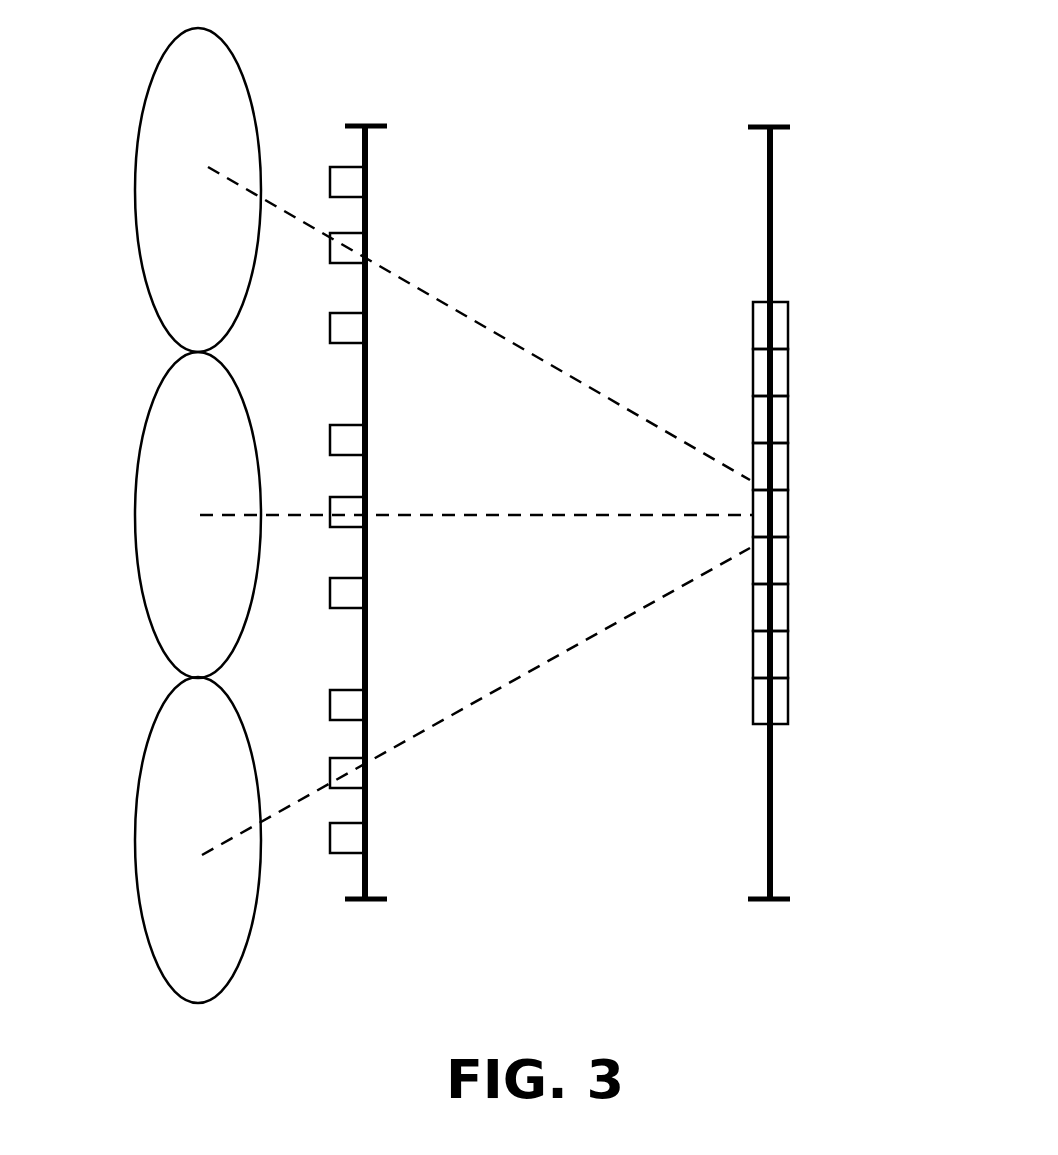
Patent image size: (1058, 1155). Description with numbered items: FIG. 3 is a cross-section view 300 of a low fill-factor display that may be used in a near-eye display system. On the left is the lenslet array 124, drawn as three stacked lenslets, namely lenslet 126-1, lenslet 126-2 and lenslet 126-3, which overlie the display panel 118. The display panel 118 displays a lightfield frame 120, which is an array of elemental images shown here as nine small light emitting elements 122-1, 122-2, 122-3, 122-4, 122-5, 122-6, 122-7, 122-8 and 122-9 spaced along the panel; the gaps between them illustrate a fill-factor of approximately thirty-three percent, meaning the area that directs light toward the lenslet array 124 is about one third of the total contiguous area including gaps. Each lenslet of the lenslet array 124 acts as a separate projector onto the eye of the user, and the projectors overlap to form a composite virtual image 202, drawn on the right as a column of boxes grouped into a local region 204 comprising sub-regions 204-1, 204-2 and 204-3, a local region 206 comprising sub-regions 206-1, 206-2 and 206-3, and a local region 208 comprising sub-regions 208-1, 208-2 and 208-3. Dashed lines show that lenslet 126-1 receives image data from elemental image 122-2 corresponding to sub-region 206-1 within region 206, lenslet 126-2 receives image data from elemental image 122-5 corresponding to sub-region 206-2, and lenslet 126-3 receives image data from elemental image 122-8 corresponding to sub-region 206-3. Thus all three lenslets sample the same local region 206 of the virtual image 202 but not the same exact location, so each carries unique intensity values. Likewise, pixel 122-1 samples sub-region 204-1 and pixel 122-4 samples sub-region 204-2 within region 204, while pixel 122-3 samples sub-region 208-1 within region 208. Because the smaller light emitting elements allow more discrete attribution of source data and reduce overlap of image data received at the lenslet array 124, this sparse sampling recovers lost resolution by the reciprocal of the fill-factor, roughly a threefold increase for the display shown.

The cross-section view 300 is at (836, 54).
The lenslet array 124 is at (137, 77).
The lenslet 126-1 is at (157, 200).
The lenslet 126-2 is at (157, 524).
The lenslet 126-3 is at (157, 851).
The lightfield frame 120 is at (311, 174).
The display panel 118 is at (368, 924).
The elemental image 122-1 is at (350, 185).
The elemental image 122-2 is at (350, 251).
The elemental image 122-3 is at (350, 331).
The elemental image 122-4 is at (350, 443).
The elemental image 122-5 is at (350, 509).
The elemental image 122-6 is at (350, 596).
The elemental image 122-7 is at (350, 701).
The elemental image 122-8 is at (350, 776).
The elemental image 122-9 is at (350, 834).
The virtual image 202 is at (779, 924).
The local region 204 is at (862, 307).
The sub-region 204-1 is at (768, 337).
The sub-region 204-2 is at (768, 384).
The sub-region 204-3 is at (768, 431).
The local region 206 is at (862, 450).
The sub-region 206-1 is at (768, 478).
The sub-region 206-2 is at (768, 525).
The sub-region 206-3 is at (768, 572).
The local region 208 is at (862, 590).
The sub-region 208-1 is at (768, 619).
The sub-region 208-2 is at (768, 666).
The sub-region 208-3 is at (768, 713).